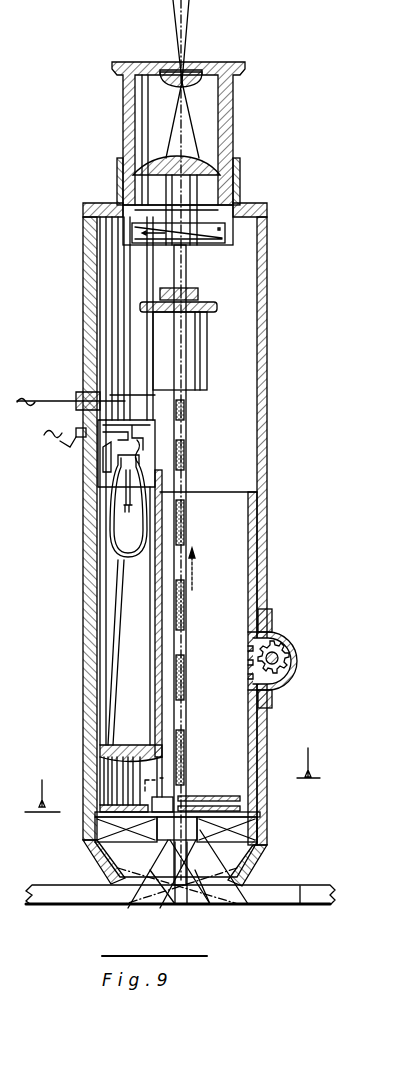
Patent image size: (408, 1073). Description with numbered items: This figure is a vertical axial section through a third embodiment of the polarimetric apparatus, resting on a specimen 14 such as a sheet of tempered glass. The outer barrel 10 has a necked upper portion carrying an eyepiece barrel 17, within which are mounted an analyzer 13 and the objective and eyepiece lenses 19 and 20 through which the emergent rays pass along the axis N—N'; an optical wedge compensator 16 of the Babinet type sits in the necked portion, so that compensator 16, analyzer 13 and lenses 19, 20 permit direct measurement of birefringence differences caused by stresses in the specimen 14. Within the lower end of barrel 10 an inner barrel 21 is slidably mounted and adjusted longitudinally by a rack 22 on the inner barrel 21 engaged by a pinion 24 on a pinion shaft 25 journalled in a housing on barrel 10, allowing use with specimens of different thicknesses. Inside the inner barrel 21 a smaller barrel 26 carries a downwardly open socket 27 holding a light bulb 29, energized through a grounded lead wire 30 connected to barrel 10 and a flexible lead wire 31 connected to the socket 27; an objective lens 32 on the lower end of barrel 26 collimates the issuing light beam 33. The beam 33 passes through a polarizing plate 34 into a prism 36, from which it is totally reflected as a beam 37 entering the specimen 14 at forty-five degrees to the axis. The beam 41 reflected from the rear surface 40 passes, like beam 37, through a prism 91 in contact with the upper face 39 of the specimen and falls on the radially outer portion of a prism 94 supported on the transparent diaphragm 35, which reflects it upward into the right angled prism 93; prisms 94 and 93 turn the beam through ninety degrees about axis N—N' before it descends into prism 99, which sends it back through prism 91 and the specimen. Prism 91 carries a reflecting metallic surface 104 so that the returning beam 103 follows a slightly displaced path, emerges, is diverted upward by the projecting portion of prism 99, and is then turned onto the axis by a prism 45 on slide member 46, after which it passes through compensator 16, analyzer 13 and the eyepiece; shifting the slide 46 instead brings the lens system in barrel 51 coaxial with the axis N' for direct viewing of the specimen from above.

The axis N—N' N is at (189, 145).
The eyepiece lens 20 is at (193, 70).
The eyepiece barrel 17 is at (233, 112).
The objective lens 19 is at (198, 165).
The analyzer 13 is at (233, 192).
The barrel 10 is at (263, 522).
The optical wedge compensator 16 is at (152, 246).
The reflected beam 103 is at (186, 262).
The prism 45 is at (200, 290).
The slide member 46 is at (218, 308).
The barrel 51 is at (200, 348).
The flexible lead wire 31 is at (53, 401).
The grounded lead wire 30 is at (64, 447).
The socket 27 is at (109, 466).
The light bulb 29 is at (113, 521).
The barrel 26 is at (135, 652).
The objective lens 32 is at (136, 745).
The collimated light beam 33 is at (112, 788).
The polarizing plate 34 is at (118, 826).
The transparent diaphragm 35 is at (248, 810).
The right angled prism 93 is at (227, 789).
The prism 94 is at (238, 828).
The prism 36 is at (88, 849).
The prism 99 is at (250, 860).
The inner barrel 21 is at (262, 752).
The pinion shaft 25 is at (286, 666).
The pinion 24 is at (282, 653).
The rack 22 is at (258, 664).
The upper face 39 is at (52, 885).
The rear surface 40 is at (68, 908).
The reflected beam 37 is at (128, 908).
The prism 91 is at (160, 908).
The axis N— N' is at (191, 890).
The reflecting metallic surface 104 is at (210, 906).
The reflected beam 41 is at (248, 896).
The specimen 14 is at (306, 902).